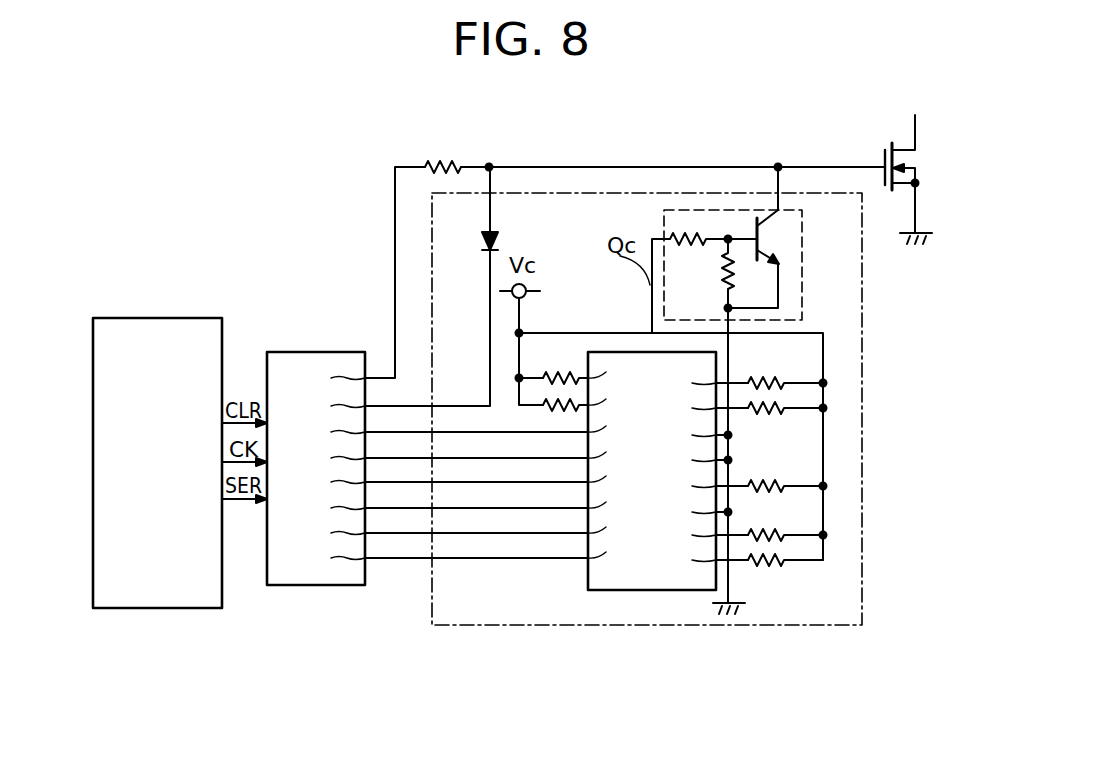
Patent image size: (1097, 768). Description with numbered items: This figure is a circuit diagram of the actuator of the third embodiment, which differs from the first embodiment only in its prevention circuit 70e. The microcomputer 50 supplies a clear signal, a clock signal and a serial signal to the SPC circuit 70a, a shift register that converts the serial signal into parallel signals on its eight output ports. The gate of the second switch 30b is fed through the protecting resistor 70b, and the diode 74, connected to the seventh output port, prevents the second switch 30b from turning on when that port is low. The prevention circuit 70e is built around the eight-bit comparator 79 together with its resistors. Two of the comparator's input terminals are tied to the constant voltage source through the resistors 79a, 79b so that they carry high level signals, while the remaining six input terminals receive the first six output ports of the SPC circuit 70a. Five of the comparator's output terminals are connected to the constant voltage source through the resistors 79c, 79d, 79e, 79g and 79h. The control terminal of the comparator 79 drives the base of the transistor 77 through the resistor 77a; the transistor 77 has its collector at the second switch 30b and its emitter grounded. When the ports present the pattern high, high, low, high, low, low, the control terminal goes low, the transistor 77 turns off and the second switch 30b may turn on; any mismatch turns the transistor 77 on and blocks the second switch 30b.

The microcomputer 50 is at (197, 318).
The SPC circuit 70a is at (318, 352).
The protecting resistor 70b is at (447, 160).
The prevention circuit 70e is at (858, 389).
The diode 74 is at (486, 242).
The transistor 77 is at (772, 240).
The resistor 77a is at (686, 225).
The 8-bit comparator 79 is at (659, 592).
The resistor 79a is at (547, 418).
The resistor 79b is at (558, 362).
The resistor 79c is at (775, 572).
The resistor 79d is at (770, 525).
The resistor 79e is at (770, 478).
The resistor 79g is at (768, 415).
The resistor 79h is at (766, 372).
The second switch 30b is at (918, 158).